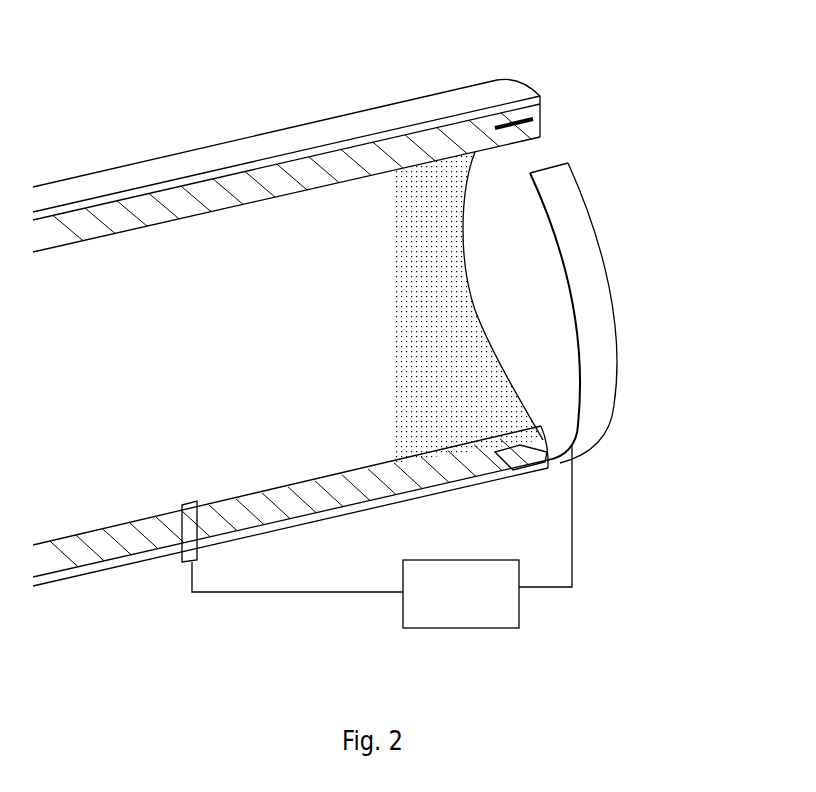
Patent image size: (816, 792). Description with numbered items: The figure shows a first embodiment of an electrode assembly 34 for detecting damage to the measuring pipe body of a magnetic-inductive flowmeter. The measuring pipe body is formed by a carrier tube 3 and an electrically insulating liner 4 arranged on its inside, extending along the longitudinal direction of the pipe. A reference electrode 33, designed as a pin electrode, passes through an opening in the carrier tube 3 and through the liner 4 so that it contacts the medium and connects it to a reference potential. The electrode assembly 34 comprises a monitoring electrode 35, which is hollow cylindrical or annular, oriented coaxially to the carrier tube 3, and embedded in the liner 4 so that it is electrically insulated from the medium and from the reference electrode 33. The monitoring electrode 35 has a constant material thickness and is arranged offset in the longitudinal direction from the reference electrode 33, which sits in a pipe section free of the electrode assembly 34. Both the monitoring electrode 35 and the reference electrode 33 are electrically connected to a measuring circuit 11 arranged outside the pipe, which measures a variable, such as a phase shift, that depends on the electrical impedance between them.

The carrier tube 3 is at (517, 78).
The electrically insulating liner 4 is at (543, 115).
The measuring circuit 11 is at (487, 536).
The reference electrode 33 is at (292, 549).
The electrode assembly 34 is at (622, 413).
The monitoring electrode 35 is at (573, 211).